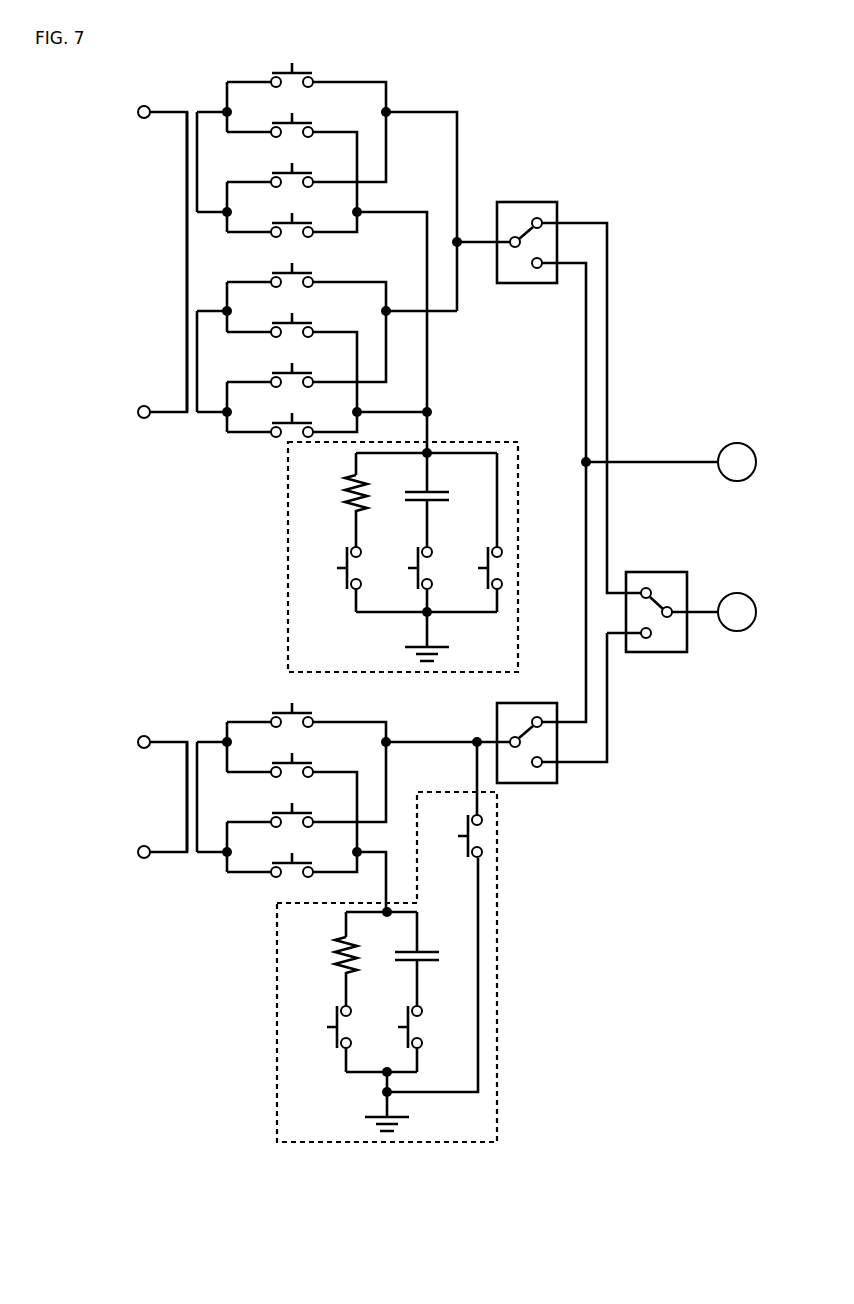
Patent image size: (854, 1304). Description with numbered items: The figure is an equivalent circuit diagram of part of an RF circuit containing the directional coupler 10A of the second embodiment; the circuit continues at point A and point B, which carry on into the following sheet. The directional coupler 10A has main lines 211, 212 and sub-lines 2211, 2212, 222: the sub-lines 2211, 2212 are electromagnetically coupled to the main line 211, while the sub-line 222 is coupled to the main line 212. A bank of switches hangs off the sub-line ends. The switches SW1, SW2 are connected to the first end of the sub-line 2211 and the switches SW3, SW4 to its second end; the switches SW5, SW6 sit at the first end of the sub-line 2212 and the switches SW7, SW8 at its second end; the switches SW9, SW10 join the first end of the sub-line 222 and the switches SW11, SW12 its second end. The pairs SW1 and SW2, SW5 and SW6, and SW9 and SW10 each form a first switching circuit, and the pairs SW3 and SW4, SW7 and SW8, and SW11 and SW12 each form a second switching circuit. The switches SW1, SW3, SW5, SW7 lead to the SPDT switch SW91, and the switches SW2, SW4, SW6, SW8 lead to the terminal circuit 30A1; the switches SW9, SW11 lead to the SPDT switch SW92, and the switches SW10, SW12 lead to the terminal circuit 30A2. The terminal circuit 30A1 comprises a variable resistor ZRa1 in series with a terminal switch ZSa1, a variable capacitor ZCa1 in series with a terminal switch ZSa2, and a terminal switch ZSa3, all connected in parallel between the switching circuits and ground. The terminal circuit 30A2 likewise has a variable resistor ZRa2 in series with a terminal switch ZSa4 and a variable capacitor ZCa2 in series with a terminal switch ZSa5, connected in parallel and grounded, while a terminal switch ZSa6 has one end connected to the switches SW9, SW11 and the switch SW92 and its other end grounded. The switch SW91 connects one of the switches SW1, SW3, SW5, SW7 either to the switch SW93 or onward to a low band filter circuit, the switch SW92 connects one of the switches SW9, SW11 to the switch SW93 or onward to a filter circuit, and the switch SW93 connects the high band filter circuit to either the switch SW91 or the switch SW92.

The directional coupler 10A is at (623, 170).
The main line 211 is at (187, 222).
The sub-line 2211 is at (197, 167).
The sub-line 2212 is at (197, 361).
The main line 212 is at (187, 793).
The sub-line 222 is at (197, 822).
The switch SW1 is at (303, 71).
The switch SW2 is at (304, 120).
The switch SW3 is at (279, 170).
The switch SW4 is at (279, 220).
The switch SW5 is at (304, 270).
The switch SW6 is at (304, 320).
The switch SW7 is at (279, 370).
The switch SW8 is at (279, 420).
The switch SW9 is at (304, 710).
The switch SW10 is at (307, 760).
The switch SW11 is at (277, 810).
The switch SW12 is at (277, 860).
The switch SW91 is at (527, 233).
The switch SW92 is at (527, 733).
The switch SW93 is at (656, 603).
The point A is at (737, 462).
The point B is at (737, 612).
The terminal circuit 30A1 is at (377, 557).
The terminal circuit 30A2 is at (362, 967).
The resistor ZRa1 is at (332, 488).
The capacitor ZCa1 is at (440, 487).
The terminal switch ZSa1 is at (334, 560).
The terminal switch ZSa2 is at (404, 560).
The terminal switch ZSa3 is at (474, 560).
The resistor ZRa2 is at (322, 948).
The capacitor ZCa2 is at (430, 947).
The terminal switch ZSa4 is at (324, 1017).
The terminal switch ZSa5 is at (394, 1017).
The terminal switch ZSa6 is at (454, 848).